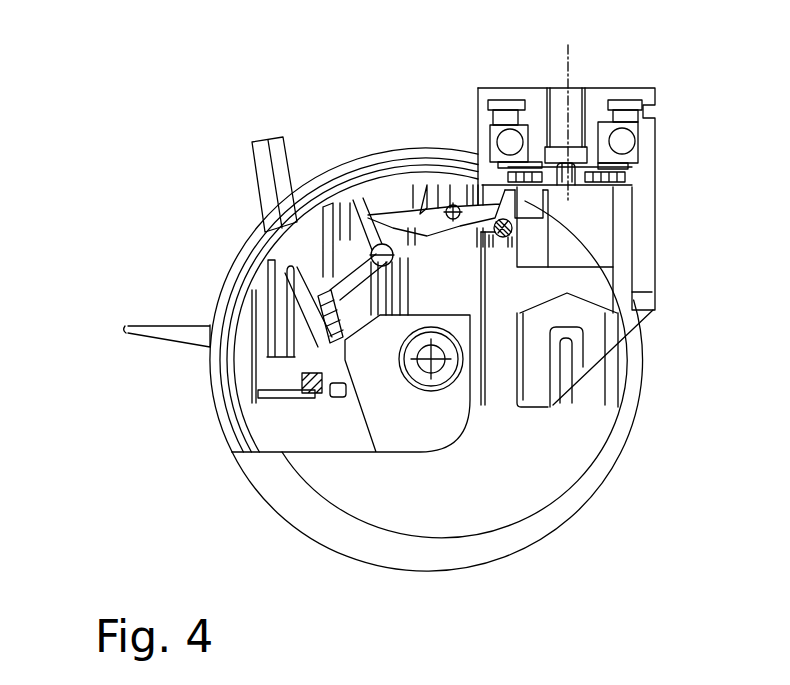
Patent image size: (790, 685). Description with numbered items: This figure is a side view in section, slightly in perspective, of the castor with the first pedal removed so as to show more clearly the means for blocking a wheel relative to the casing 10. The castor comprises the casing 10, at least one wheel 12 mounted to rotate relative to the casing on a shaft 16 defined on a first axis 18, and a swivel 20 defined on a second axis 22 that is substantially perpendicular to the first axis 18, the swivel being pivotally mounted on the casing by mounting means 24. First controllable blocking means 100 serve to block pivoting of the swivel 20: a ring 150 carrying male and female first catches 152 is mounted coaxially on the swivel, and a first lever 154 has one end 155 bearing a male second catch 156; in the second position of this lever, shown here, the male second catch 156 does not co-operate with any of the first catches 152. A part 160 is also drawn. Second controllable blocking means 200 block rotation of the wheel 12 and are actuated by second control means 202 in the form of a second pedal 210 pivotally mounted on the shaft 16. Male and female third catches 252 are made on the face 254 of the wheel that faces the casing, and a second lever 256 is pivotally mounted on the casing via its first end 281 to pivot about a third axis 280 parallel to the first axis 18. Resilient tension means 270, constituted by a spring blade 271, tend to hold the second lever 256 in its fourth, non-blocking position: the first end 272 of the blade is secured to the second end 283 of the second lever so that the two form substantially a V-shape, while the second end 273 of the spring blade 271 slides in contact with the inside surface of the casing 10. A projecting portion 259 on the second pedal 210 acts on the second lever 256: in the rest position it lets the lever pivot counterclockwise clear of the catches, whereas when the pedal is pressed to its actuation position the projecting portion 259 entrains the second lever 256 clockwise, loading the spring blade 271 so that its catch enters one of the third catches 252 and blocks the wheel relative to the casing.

The casing 10 is at (393, 200).
The wheel 12 is at (500, 537).
The shaft 16 is at (473, 410).
The first axis 18 is at (441, 359).
The swivel 20 is at (607, 98).
The second axis 22 is at (568, 63).
The means for mounting the swivel 24 is at (619, 140).
The first controllable blocking means 100 is at (407, 222).
The ring 150 is at (627, 172).
The first catches 152 is at (633, 178).
The first lever 154 is at (423, 208).
The end of the first lever 155 is at (495, 212).
The male second catch 156 is at (503, 218).
The latch 160 is at (515, 238).
The second controllable blocking means 200 is at (318, 253).
The second control means 202 is at (308, 435).
The second pedal 210 is at (348, 427).
The third catches 252 is at (216, 299).
The face of the wheel 254 is at (298, 243).
The second lever 256 is at (350, 340).
The projecting portion 259 is at (330, 385).
The resilient tension means 270 is at (267, 266).
The spring blade 271 is at (330, 305).
The first end of the spring blade 272 is at (317, 360).
The second end of the spring blade 273 is at (355, 288).
The third axis 280 is at (372, 248).
The first end of the second lever 281 is at (280, 123).
The second end of the second lever 283 is at (236, 445).